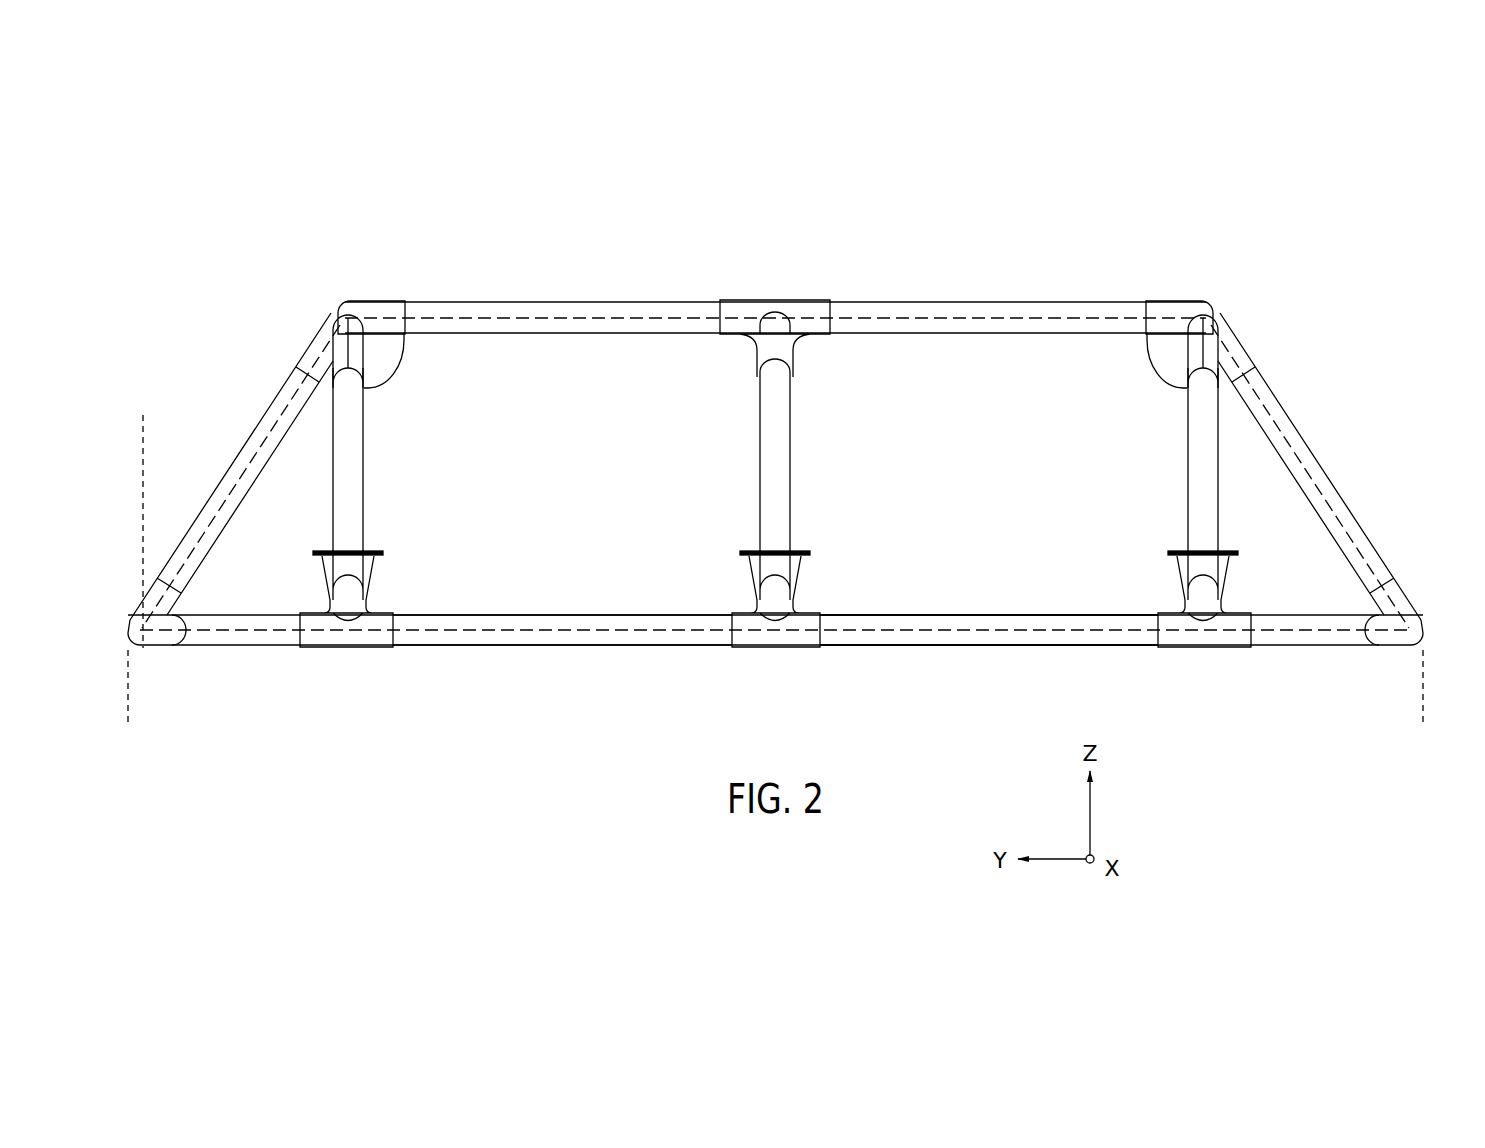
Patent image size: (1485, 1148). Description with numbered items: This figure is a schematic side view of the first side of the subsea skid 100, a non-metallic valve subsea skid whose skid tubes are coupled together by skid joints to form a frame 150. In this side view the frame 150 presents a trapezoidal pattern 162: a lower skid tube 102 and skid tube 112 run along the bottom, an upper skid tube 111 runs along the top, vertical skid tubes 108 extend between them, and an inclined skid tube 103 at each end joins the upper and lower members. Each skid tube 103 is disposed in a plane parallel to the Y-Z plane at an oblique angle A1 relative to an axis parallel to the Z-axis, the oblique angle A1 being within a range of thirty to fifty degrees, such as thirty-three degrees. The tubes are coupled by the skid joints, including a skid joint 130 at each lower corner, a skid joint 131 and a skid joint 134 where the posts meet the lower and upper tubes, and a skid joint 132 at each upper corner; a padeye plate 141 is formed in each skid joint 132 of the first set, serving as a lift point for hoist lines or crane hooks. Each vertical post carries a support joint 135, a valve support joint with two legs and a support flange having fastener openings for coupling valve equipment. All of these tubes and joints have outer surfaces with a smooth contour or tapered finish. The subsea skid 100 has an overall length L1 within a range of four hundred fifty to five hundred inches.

The subsea skid 100 is at (232, 172).
The skid tube 102 is at (240, 637).
The skid tube 103 is at (203, 520).
The skid tube 108 is at (353, 445).
The skid tube 111 is at (530, 305).
The skid tube 112 is at (545, 645).
The skid joint 130 is at (123, 623).
The skid joint 131 is at (346, 651).
The skid joint 132 is at (333, 298).
The skid joint 134 is at (775, 298).
The support joint 135 is at (372, 575).
The padeye plate 141 is at (386, 356).
The frame 150 is at (642, 258).
The trapezoidal pattern 162 is at (1000, 645).
The oblique angle A1 is at (146, 433).
The length L1 is at (1422, 710).